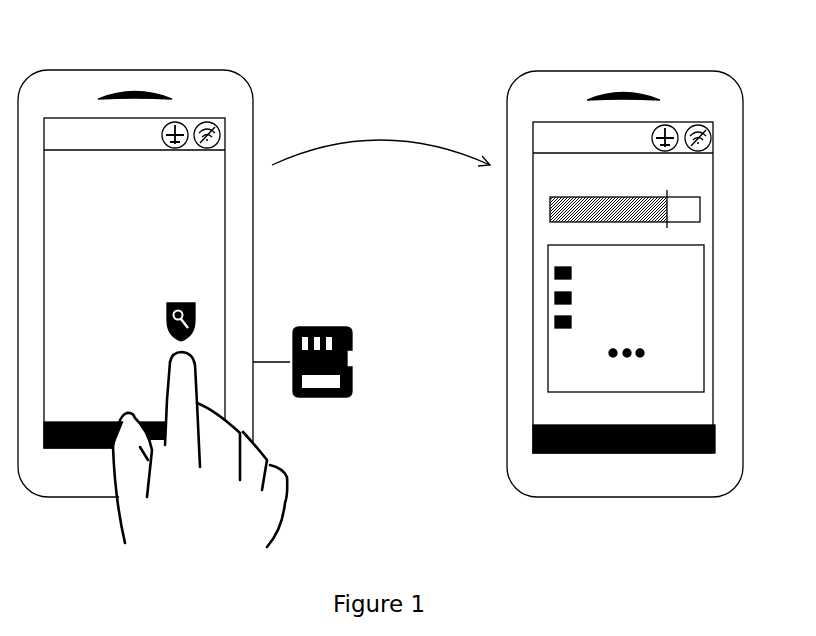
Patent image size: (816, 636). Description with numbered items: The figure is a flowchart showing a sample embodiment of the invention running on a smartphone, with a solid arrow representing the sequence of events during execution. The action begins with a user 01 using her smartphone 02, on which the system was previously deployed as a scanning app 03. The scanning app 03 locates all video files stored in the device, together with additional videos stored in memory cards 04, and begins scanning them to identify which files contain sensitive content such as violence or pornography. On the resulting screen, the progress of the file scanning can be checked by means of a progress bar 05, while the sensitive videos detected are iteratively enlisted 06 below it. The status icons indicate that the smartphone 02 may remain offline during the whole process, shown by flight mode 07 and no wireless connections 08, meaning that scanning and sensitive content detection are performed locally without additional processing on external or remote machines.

The user 01 is at (285, 507).
The smartphone 02 is at (183, 70).
The scanning app 03 is at (183, 300).
The memory card 04 is at (350, 333).
The progress bar 05 is at (700, 201).
The list of sensitive videos 06 is at (704, 316).
The flight mode 07 is at (177, 122).
The no wireless connections 08 is at (213, 122).